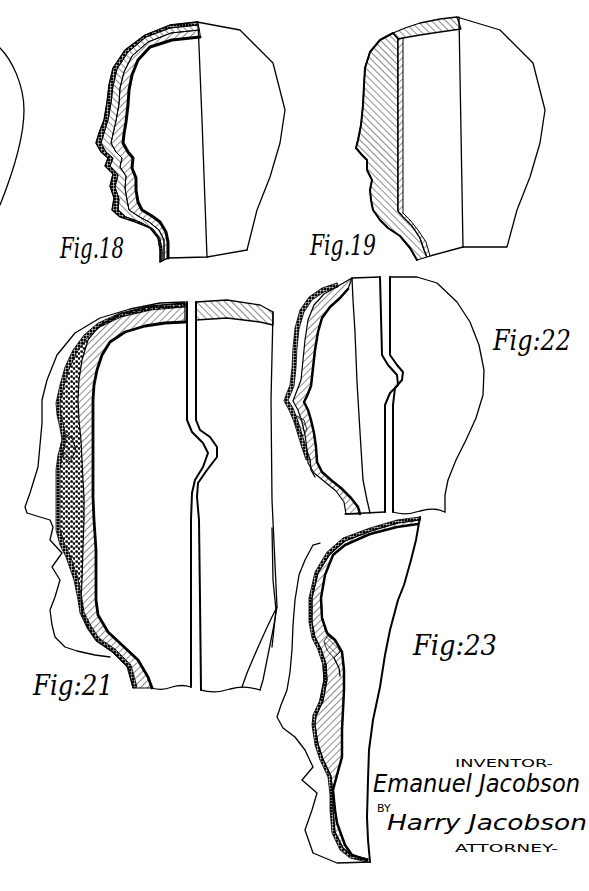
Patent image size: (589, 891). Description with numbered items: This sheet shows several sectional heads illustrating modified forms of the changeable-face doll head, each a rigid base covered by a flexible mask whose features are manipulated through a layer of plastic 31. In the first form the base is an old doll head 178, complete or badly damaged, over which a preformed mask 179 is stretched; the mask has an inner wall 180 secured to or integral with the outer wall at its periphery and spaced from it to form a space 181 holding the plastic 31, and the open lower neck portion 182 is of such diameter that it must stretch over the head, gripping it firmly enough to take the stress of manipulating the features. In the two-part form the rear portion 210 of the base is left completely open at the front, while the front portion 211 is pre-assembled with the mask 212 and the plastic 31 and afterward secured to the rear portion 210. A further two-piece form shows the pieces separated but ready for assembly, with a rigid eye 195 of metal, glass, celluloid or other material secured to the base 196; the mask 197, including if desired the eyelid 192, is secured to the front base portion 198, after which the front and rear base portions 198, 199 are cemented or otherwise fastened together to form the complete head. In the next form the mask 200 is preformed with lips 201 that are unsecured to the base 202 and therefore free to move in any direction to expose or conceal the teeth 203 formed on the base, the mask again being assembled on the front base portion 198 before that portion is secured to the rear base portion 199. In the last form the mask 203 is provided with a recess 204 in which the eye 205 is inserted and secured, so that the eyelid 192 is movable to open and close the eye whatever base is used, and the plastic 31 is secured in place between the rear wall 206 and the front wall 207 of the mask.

In FIG. 18, the plastic 31 is at (111, 117).
In FIG. 19, the plastic 31 is at (389, 82).
In FIG. 23, the plastic 31 is at (331, 613).
In FIG. 18, the old doll head 178 is at (160, 44).
In FIG. 18, the mask 179 is at (108, 73).
In FIG. 18, the inner wall 180 is at (121, 86).
In FIG. 18, the space 181 is at (129, 107).
In FIG. 18, the neck portion 182 is at (163, 256).
In FIG. 21, the eyelid 192 is at (64, 440).
In FIG. 23, the eyelid 192 is at (320, 656).
In FIG. 21, the eye 195 is at (83, 437).
In FIG. 21, the base 196 is at (95, 497).
In FIG. 21, the mask 197 is at (56, 403).
In FIG. 21, the front base portion 198 is at (152, 322).
In FIG. 22, the front base portion 198 is at (336, 301).
In FIG. 21, the rear base portion 199 is at (222, 320).
In FIG. 22, the rear base portion 199 is at (431, 291).
In FIG. 22, the mask 200 is at (337, 290).
In FIG. 22, the lips 201 is at (302, 427).
In FIG. 22, the base 202 is at (312, 355).
In FIG. 22, the teeth 203 is at (317, 413).
In FIG. 23, the teeth 203 is at (342, 535).
In FIG. 23, the recess 204 is at (338, 642).
In FIG. 23, the eye 205 is at (341, 659).
In FIG. 23, the rear wall 206 is at (326, 584).
In FIG. 23, the front wall 207 is at (319, 560).
In FIG. 19, the rear portion 210 is at (437, 31).
In FIG. 19, the front portion 211 is at (404, 123).
In FIG. 19, the mask 212 is at (362, 100).